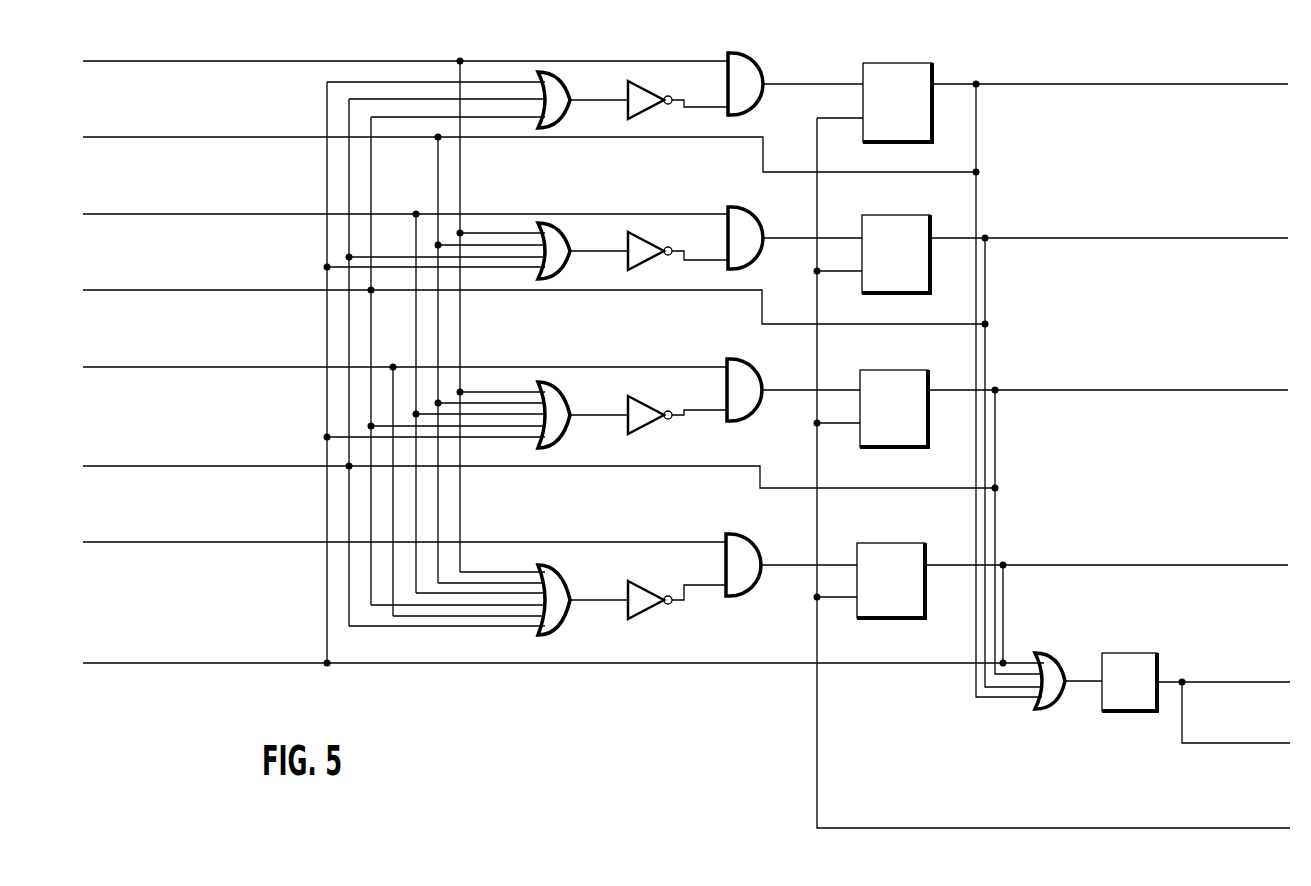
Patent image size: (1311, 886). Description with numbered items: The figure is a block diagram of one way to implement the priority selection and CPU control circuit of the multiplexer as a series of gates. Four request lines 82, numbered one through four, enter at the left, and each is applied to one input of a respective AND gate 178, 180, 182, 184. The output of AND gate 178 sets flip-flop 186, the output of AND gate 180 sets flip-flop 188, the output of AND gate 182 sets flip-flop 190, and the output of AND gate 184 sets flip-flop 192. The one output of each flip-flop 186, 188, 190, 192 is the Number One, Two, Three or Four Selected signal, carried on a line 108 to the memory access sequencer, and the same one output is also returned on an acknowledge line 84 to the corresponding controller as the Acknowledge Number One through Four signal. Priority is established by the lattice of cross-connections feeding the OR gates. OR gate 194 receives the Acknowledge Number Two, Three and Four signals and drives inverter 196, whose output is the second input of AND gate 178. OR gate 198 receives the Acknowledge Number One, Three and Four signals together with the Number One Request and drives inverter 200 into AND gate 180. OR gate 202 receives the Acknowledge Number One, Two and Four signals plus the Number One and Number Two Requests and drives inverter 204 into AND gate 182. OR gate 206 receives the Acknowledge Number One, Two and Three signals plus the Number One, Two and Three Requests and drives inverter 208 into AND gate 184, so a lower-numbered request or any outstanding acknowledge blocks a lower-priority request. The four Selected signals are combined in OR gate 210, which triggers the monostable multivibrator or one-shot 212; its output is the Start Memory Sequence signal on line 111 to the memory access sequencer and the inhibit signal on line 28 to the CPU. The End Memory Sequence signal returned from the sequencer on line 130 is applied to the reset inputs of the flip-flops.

The request line 82 is at (282, 526).
The acknowledge line 84 is at (282, 647).
The selected signal line 108 is at (1185, 589).
The start memory sequence line 111 is at (1194, 685).
The inhibit signal line 28 is at (1196, 745).
The end memory sequence line 130 is at (990, 828).
The AND gate 178 is at (762, 64).
The AND gate 180 is at (760, 216).
The AND gate 182 is at (758, 368).
The AND gate 184 is at (757, 543).
The flip-flop 186 is at (934, 66).
The flip-flop 188 is at (920, 215).
The flip-flop 190 is at (918, 370).
The flip-flop 192 is at (915, 543).
The OR gate 194 is at (566, 116).
The inverter 196 is at (648, 110).
The OR gate 198 is at (566, 266).
The inverter 200 is at (648, 261).
The OR gate 202 is at (566, 434).
The inverter 204 is at (650, 425).
The OR gate 206 is at (564, 624).
The inverter 208 is at (648, 610).
The OR gate 210 is at (1036, 705).
The one-shot 212 is at (1137, 653).